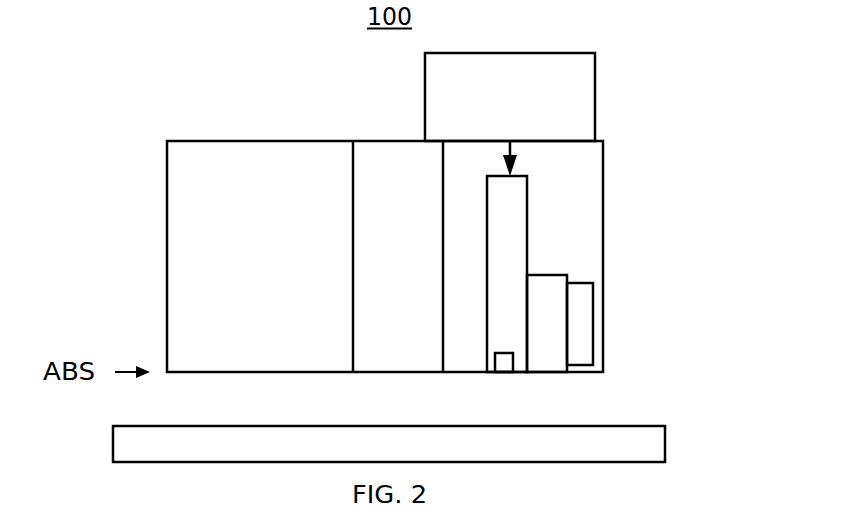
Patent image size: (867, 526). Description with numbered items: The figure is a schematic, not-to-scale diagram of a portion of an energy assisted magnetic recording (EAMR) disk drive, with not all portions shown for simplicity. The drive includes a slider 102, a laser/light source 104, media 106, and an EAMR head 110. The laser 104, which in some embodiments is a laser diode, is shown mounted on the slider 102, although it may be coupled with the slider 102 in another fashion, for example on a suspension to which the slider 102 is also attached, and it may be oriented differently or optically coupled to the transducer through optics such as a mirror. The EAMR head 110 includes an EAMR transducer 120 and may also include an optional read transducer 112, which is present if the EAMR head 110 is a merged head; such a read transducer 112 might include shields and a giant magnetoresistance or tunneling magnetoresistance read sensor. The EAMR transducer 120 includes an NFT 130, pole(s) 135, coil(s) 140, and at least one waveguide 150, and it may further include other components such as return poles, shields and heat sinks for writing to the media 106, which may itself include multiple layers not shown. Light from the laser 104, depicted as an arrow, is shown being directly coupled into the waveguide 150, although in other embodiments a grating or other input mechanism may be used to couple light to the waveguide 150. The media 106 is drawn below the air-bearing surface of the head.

The slider 102 is at (167, 195).
The laser/light source 104 is at (425, 122).
The media 106 is at (665, 445).
The EAMR head 110 is at (703, 263).
The read transducer 112 is at (390, 373).
The EAMR transducer 120 is at (603, 193).
The NFT 130 is at (505, 373).
The pole 135 is at (548, 275).
The coil 140 is at (593, 300).
The waveguide 150 is at (522, 373).